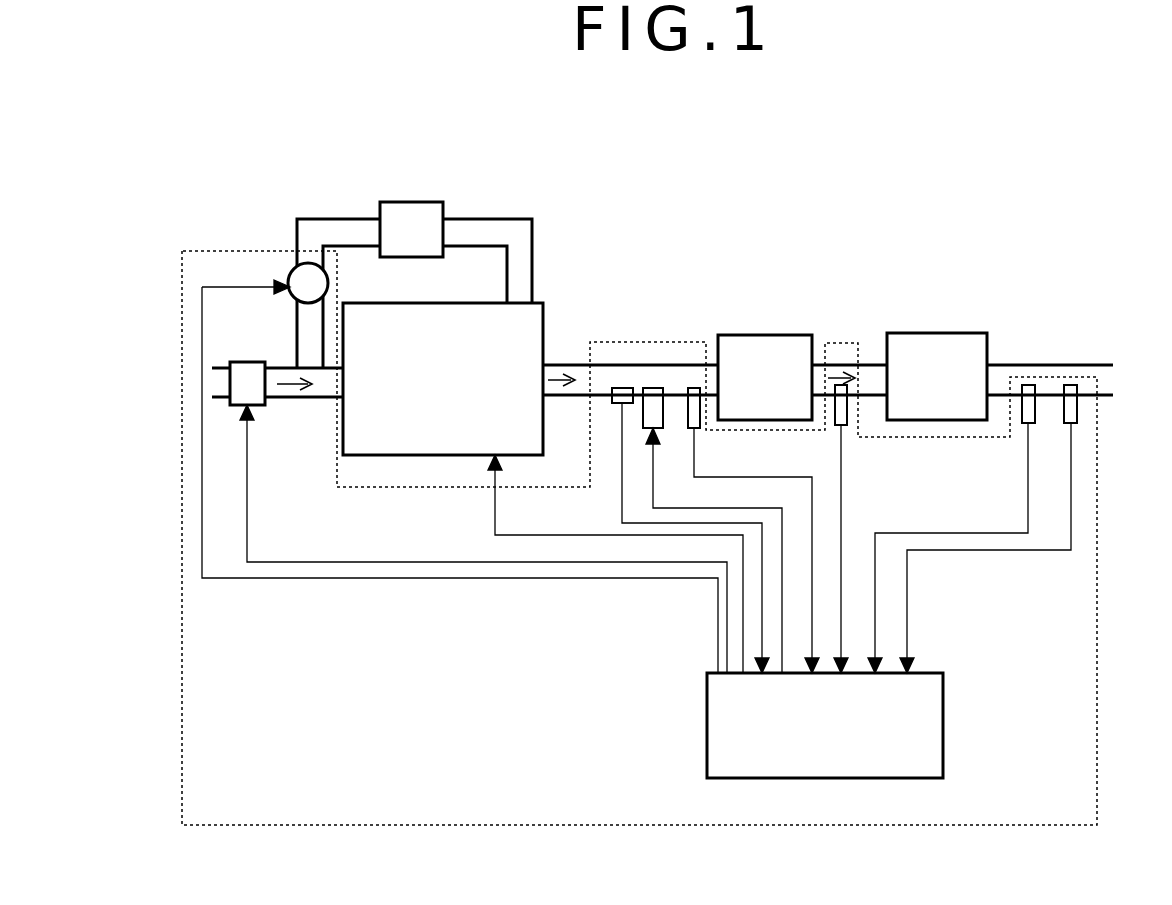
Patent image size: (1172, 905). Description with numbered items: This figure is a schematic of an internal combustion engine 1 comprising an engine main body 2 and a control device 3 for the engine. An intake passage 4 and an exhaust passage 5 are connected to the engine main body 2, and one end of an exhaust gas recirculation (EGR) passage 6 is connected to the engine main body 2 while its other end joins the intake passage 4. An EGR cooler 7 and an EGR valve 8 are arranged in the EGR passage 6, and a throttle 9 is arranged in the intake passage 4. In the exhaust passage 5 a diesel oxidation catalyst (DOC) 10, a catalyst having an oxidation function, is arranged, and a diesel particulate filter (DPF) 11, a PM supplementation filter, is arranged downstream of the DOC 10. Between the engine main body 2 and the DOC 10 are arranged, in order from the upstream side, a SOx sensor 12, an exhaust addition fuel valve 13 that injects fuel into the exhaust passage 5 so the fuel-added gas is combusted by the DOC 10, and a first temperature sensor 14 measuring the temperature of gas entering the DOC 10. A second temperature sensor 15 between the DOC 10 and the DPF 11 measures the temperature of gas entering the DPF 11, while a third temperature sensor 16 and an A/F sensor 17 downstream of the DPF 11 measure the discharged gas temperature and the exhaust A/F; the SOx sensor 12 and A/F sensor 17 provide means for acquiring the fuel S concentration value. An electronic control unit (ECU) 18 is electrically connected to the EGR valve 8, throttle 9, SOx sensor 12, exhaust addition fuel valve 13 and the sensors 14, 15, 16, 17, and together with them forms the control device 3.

The internal combustion engine 1 is at (1040, 863).
The engine main body 2 is at (543, 303).
The control device 3 is at (858, 827).
The intake passage 4 is at (285, 367).
The exhaust passage 5 is at (553, 365).
The exhaust gas recirculation (EGR) passage 6 is at (327, 219).
The EGR cooler 7 is at (438, 203).
The EGR valve 8 is at (295, 268).
The throttle 9 is at (266, 410).
The diesel oxidation catalyst (DOC) 10 is at (780, 335).
The diesel particulate filter (DPF) 11 is at (942, 332).
The SOx sensor 12 is at (620, 387).
The exhaust addition fuel valve 13 is at (657, 387).
The first temperature sensor 14 is at (700, 387).
The second temperature sensor 15 is at (845, 428).
The third temperature sensor 16 is at (1037, 385).
The A/F sensor 17 is at (1074, 383).
The electronic control unit (ECU) 18 is at (707, 737).